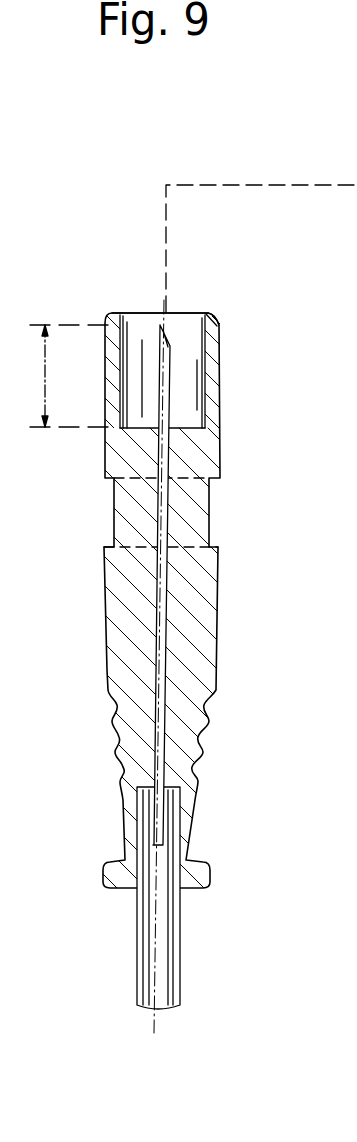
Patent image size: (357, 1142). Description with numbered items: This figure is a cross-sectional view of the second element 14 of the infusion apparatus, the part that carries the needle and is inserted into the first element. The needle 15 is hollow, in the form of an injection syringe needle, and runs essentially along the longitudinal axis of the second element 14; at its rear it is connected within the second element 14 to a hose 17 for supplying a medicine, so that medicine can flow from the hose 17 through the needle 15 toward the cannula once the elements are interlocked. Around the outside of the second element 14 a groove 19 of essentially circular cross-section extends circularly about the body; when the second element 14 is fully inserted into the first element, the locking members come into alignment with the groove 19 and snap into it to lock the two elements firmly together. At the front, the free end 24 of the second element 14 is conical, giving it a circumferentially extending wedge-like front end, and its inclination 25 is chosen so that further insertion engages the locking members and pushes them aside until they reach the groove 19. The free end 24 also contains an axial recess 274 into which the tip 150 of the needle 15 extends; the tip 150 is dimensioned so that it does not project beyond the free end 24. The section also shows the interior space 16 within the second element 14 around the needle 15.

The second element 14 is at (215, 675).
The needle 15 is at (172, 418).
The bore cavity 16 is at (193, 378).
The hose 17 is at (178, 960).
The groove 19 is at (209, 513).
The free end 24 is at (212, 300).
The inclination 25 is at (220, 321).
The tip 150 is at (70, 376).
The axial recess 274 is at (160, 323).